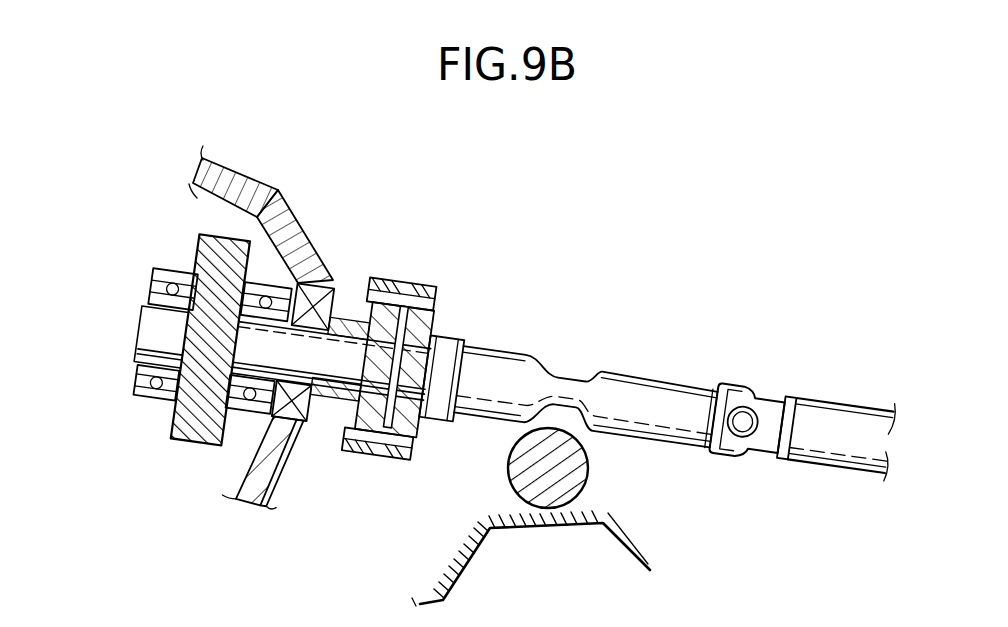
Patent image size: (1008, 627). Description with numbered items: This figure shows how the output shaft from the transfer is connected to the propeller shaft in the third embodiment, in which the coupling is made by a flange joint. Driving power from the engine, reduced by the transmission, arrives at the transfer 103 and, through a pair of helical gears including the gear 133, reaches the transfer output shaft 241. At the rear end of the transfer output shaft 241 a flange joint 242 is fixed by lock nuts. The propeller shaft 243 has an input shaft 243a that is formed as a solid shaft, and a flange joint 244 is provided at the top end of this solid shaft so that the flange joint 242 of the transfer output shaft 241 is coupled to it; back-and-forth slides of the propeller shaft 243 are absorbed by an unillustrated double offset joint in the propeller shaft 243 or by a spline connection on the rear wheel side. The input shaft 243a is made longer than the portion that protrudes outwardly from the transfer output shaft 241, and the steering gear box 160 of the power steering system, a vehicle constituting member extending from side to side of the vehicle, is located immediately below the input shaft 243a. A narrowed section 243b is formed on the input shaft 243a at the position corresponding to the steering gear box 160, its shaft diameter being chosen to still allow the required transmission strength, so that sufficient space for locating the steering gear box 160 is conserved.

The transfer 103 is at (271, 166).
The gear 133 is at (191, 452).
The transfer output shaft 241 is at (140, 333).
The flange joint 242 is at (391, 278).
The propeller shaft 243 is at (835, 398).
The input shaft 243a is at (682, 383).
The narrowed section 243b is at (566, 376).
The flange joint 244 is at (420, 330).
The steering gear box 160 is at (510, 464).